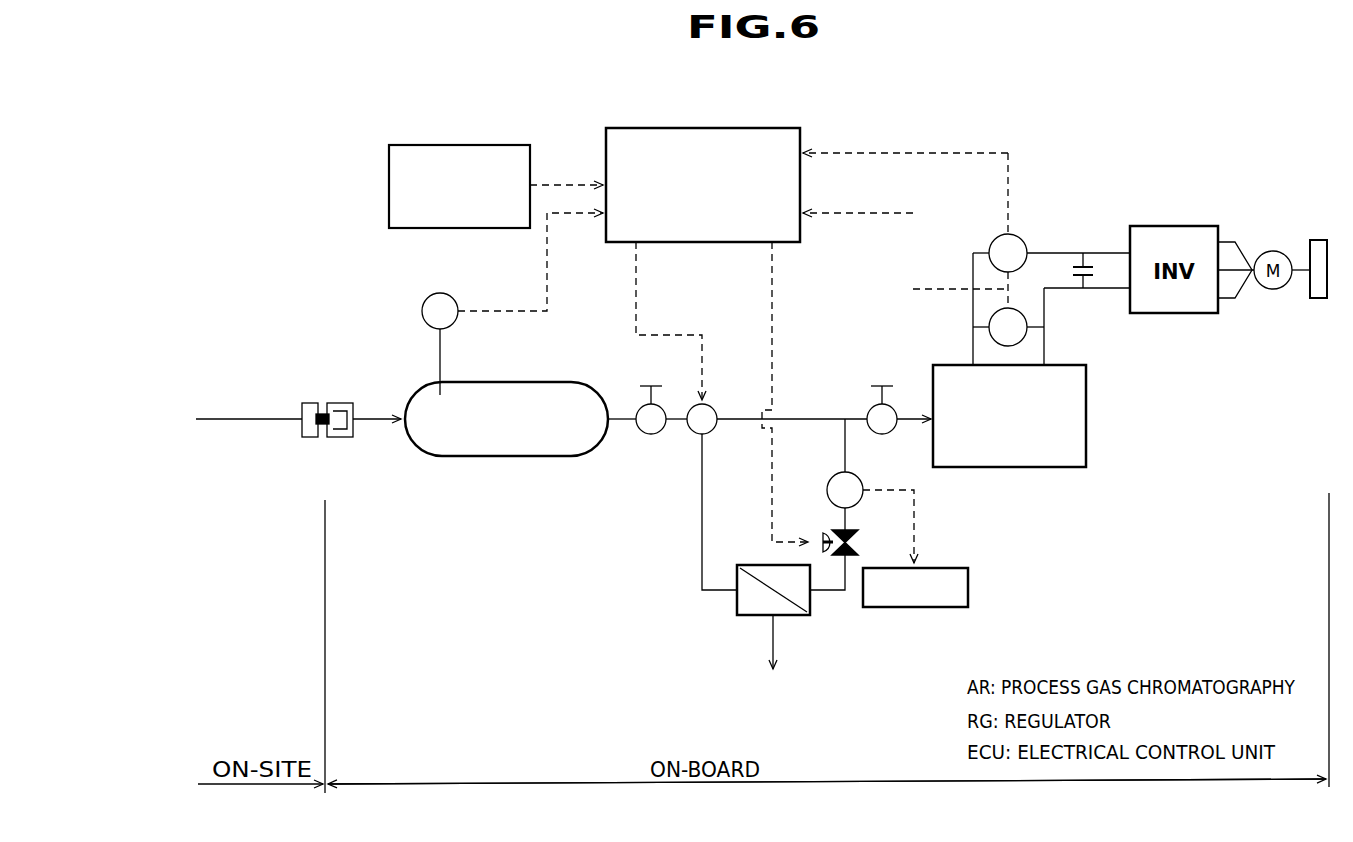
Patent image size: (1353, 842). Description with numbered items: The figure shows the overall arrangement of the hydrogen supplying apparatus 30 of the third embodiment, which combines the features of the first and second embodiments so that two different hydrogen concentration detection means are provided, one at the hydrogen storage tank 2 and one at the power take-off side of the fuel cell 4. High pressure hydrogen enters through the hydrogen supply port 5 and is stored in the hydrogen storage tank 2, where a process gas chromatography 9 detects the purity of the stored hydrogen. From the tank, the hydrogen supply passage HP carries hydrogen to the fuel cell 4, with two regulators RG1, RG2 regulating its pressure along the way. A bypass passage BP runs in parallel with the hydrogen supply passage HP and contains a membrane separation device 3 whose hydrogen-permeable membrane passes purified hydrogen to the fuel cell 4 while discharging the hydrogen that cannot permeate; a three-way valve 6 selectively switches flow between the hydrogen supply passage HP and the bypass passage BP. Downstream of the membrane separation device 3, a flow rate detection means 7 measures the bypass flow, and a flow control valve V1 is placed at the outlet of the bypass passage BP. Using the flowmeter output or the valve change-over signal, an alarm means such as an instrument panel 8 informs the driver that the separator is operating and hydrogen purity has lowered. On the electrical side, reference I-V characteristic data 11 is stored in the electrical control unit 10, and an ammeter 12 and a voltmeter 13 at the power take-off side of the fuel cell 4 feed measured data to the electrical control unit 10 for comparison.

The hydrogen storage tank 2 is at (503, 458).
The membrane separation device 3 is at (753, 618).
The fuel cell 4 is at (1005, 468).
The hydrogen supply port 5 is at (335, 440).
The three-way valve 6 is at (712, 404).
The flow rate detection means 7 is at (827, 488).
The instrument panel 8 is at (968, 588).
The process gas chromatography 9 is at (421, 311).
The electrical control unit 10 is at (775, 128).
The I-V characteristic data 11 is at (504, 145).
The ammeter 12 is at (1023, 240).
The voltmeter 13 is at (1022, 338).
The hydrogen supplying apparatus 30 is at (907, 124).
The hydrogen supply passage HP is at (797, 412).
The bypass passage BP is at (702, 535).
The flow control valve V1 is at (852, 528).
The regulator RG1 is at (651, 423).
The regulator RG2 is at (882, 423).